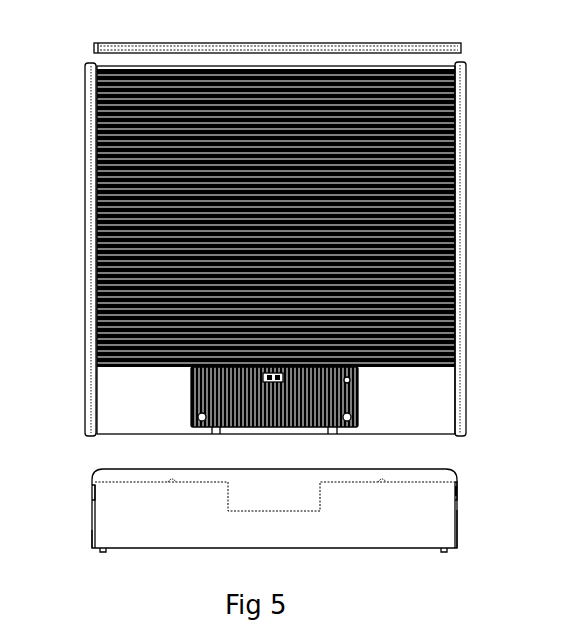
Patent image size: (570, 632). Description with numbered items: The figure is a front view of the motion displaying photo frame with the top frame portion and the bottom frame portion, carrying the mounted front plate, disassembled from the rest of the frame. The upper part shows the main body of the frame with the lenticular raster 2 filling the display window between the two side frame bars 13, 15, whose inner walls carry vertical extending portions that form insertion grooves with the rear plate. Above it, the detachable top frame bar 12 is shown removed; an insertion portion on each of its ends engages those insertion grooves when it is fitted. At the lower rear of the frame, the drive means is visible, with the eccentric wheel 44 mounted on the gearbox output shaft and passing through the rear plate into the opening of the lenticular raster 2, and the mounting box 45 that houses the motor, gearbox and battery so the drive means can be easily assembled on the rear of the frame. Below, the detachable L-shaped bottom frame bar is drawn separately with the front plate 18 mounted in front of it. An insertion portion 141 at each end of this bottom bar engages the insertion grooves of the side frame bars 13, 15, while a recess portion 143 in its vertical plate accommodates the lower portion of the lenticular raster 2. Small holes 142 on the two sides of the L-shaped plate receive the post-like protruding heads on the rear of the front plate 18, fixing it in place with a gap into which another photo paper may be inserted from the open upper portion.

The lenticular raster 2 is at (455, 103).
The top frame bar 12 is at (241, 40).
The side frame bar 13 is at (93, 171).
The side frame bar 15 is at (463, 193).
The front plate 18 is at (108, 513).
The eccentric wheel 44 is at (265, 383).
The mounting box 45 is at (287, 383).
The insertion portion 141 is at (92, 540).
The small holes 142 is at (92, 487).
The recess portion 143 is at (289, 512).